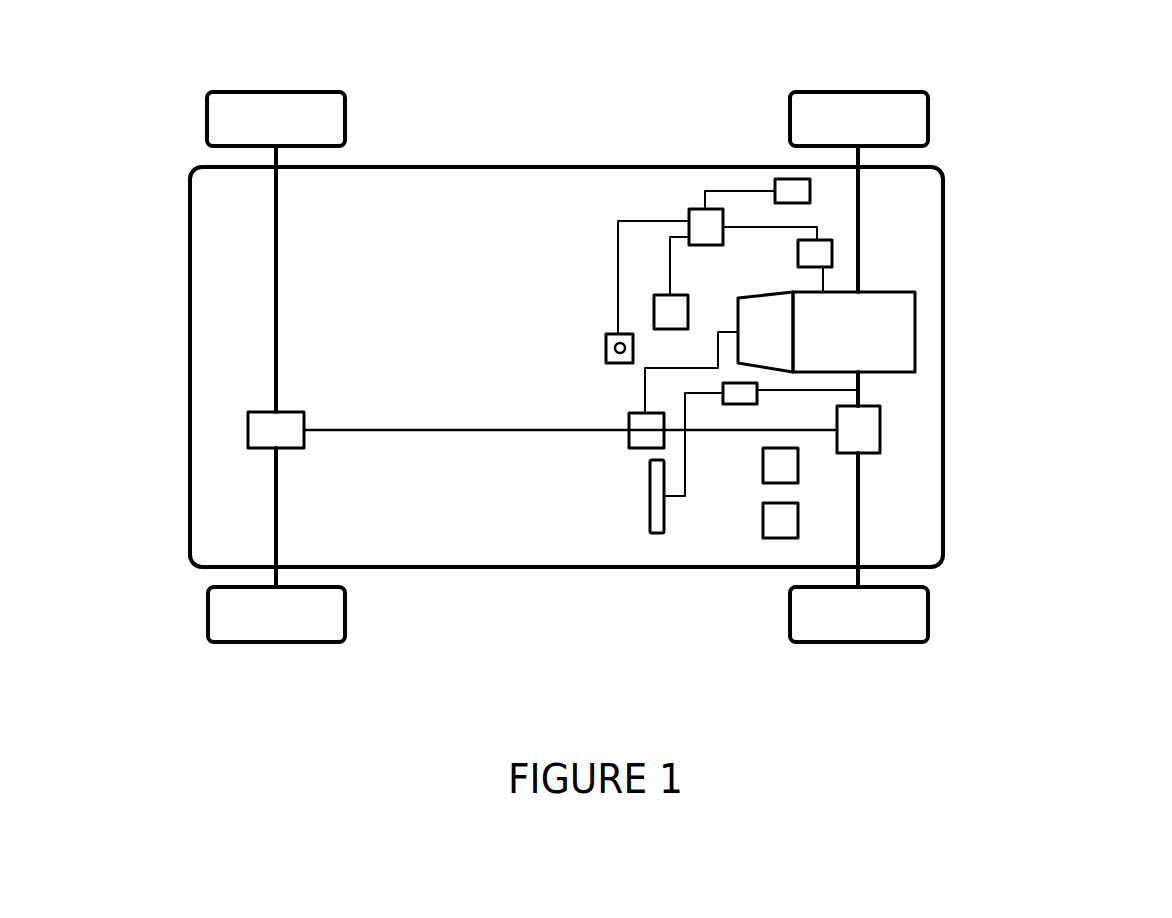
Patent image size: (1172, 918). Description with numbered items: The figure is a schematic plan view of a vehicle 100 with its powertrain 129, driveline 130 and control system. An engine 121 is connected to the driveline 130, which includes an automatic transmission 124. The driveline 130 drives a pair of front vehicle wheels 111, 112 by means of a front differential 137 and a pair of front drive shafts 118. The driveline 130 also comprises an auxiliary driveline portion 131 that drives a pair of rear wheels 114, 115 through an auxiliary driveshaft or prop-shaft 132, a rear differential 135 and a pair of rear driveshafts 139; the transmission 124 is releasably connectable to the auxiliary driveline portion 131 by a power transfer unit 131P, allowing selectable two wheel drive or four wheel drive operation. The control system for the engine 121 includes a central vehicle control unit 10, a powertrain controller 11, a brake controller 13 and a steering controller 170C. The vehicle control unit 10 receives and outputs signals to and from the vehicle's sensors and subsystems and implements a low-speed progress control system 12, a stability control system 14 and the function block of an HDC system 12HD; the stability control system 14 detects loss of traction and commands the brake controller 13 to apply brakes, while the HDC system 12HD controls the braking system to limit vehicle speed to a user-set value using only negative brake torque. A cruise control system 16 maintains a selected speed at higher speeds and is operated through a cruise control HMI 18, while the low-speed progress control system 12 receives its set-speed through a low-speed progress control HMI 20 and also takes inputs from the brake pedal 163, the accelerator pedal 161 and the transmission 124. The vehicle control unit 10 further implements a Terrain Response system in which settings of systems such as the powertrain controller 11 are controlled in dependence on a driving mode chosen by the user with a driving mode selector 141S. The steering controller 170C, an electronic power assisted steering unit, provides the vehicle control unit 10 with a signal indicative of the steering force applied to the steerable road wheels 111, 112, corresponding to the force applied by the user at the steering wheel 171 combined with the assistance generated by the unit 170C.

The vehicle 100 is at (1086, 109).
The vehicle control unit 10 is at (678, 168).
The low-speed progress control system 12 is at (678, 168).
The stability control system 14 is at (678, 168).
The cruise control system 16 is at (678, 168).
The HDC system 12HD is at (700, 221).
The brake controller 13 is at (783, 188).
The cruise control HMI 18 is at (615, 209).
The low-speed progress control HMI 20 is at (667, 305).
The driving mode selector 141S is at (609, 337).
The powertrain controller 11 is at (822, 257).
The automatic transmission 124 is at (765, 312).
The engine 121 is at (883, 319).
The front vehicle wheel 111 is at (907, 113).
The front vehicle wheel 112 is at (908, 627).
The rear wheel 114 is at (248, 113).
The rear wheel 115 is at (235, 618).
The front drive shafts 118 is at (859, 210).
The rear driveshafts 139 is at (277, 258).
The powertrain 129 is at (1082, 362).
The driveline 130 is at (1048, 549).
The auxiliary driveline portion 131 is at (462, 612).
The power transfer unit 131P is at (641, 440).
The prop-shaft 132 is at (431, 433).
The rear differential 135 is at (248, 432).
The front differential 137 is at (873, 428).
The steering controller 170C is at (739, 395).
The steering wheel 171 is at (655, 527).
The brake pedal 163 is at (775, 466).
The accelerator pedal 161 is at (780, 528).